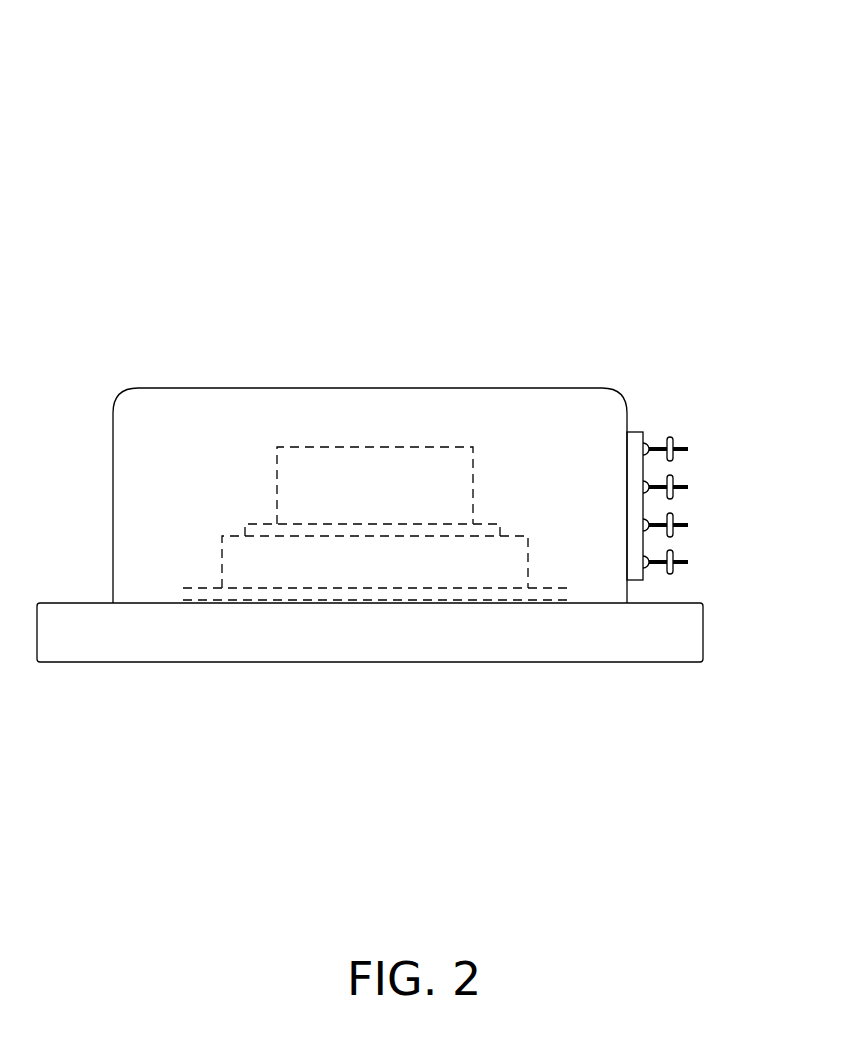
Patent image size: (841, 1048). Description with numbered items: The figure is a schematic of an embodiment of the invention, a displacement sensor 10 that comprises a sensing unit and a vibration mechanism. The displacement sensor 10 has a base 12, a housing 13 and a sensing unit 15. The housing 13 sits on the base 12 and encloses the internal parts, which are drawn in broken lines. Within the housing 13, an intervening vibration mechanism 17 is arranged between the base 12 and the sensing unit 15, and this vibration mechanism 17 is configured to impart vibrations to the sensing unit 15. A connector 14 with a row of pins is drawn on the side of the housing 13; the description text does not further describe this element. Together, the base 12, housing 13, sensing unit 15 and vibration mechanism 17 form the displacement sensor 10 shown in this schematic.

The displacement sensor 10 is at (682, 95).
The base 12 is at (630, 633).
The housing 13 is at (507, 413).
The connector with pins 14 is at (633, 440).
The sensing unit 15 is at (318, 465).
The vibration mechanism 17 is at (273, 562).